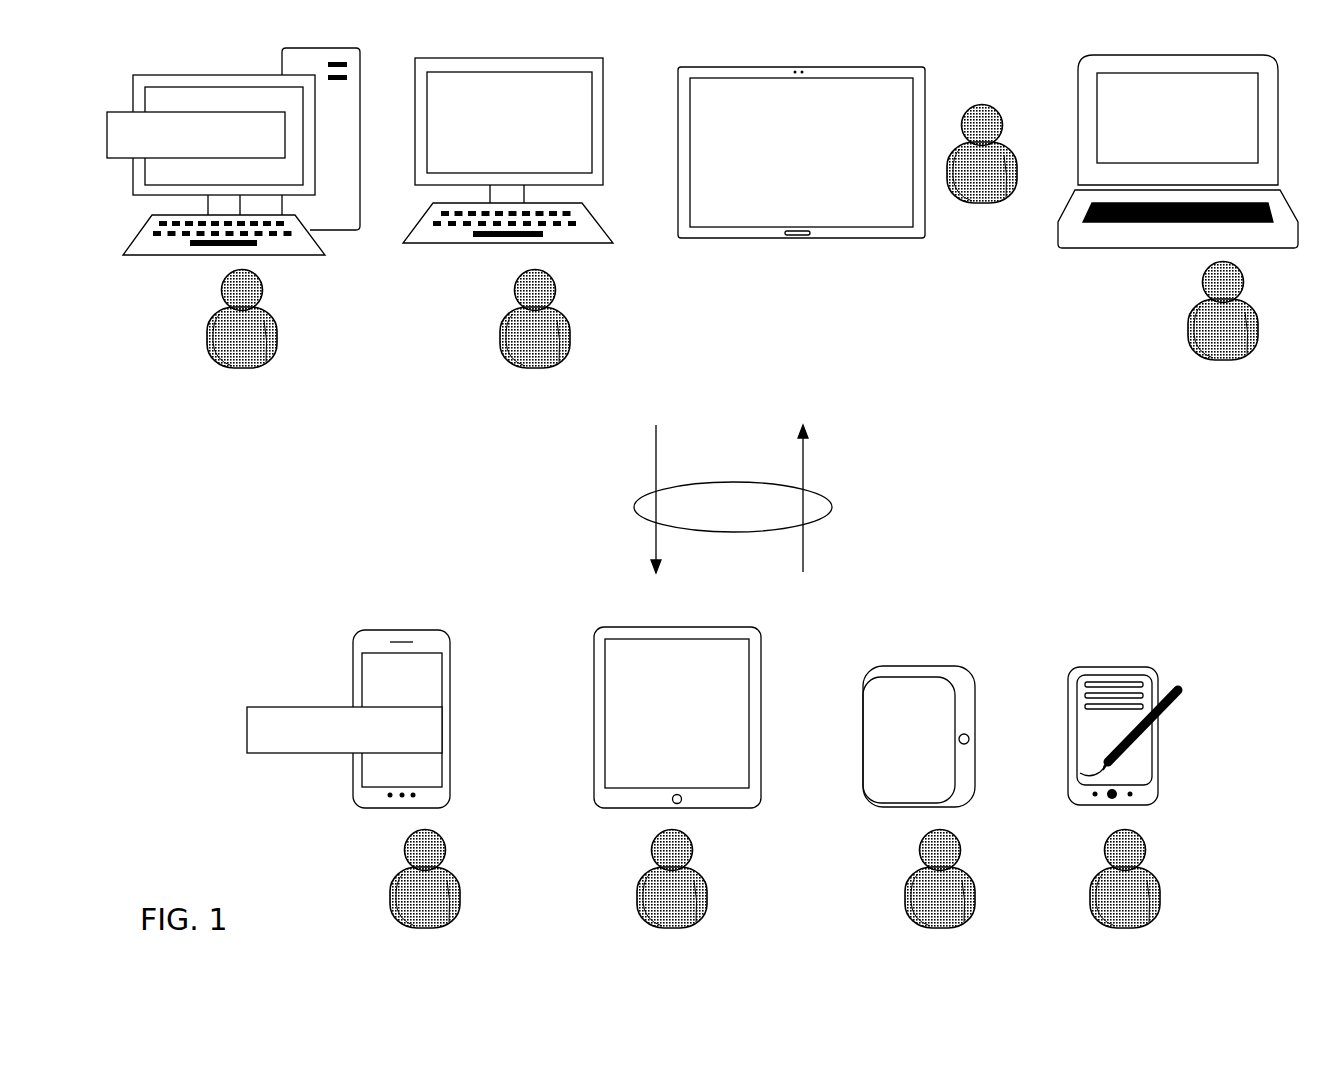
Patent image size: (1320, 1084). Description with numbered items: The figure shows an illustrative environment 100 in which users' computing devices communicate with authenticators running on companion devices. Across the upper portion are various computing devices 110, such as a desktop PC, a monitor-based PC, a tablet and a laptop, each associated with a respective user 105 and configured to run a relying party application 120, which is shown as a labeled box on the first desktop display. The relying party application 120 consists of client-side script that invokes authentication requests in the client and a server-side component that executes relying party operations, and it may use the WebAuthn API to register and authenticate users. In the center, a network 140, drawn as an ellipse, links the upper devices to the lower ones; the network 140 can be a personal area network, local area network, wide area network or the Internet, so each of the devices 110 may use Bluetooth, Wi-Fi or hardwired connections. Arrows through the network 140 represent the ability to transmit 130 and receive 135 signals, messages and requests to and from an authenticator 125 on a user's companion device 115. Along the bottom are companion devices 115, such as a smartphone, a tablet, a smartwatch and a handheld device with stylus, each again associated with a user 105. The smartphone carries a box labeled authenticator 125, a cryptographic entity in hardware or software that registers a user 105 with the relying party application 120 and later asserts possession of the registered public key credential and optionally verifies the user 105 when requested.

The environment 100 is at (167, 878).
The user 105 is at (272, 366).
The computing device 110 is at (325, 255).
The companion device 115 is at (355, 630).
The relying party application 120 is at (195, 112).
The authenticator 125 is at (247, 727).
The transmit 130 is at (635, 507).
The receive 135 is at (832, 507).
The network 140 is at (733, 482).